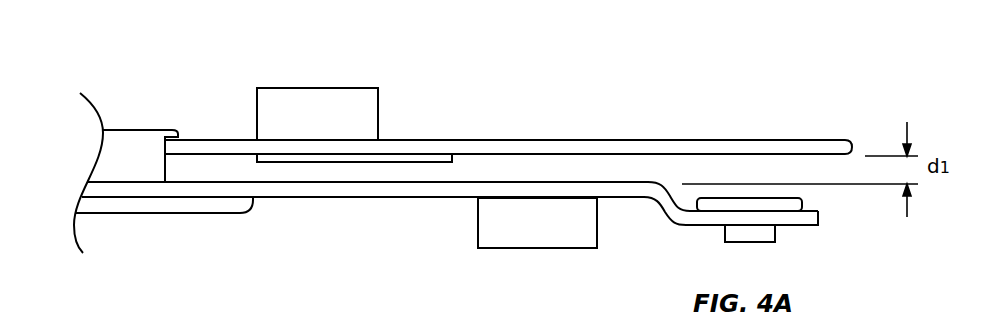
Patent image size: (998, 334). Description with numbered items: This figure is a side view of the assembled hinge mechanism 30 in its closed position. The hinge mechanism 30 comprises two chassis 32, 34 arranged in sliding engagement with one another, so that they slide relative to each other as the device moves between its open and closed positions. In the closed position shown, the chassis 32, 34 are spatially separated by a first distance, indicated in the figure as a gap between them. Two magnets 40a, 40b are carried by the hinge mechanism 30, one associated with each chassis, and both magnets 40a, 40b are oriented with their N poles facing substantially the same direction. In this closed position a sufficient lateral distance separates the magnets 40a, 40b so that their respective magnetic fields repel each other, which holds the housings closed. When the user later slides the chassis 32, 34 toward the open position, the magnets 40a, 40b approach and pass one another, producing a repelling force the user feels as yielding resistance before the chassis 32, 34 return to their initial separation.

The hinge mechanism 30 is at (803, 93).
The chassis 32 is at (212, 139).
The chassis 34 is at (313, 198).
The magnet 40a is at (345, 88).
The magnet 40b is at (512, 248).